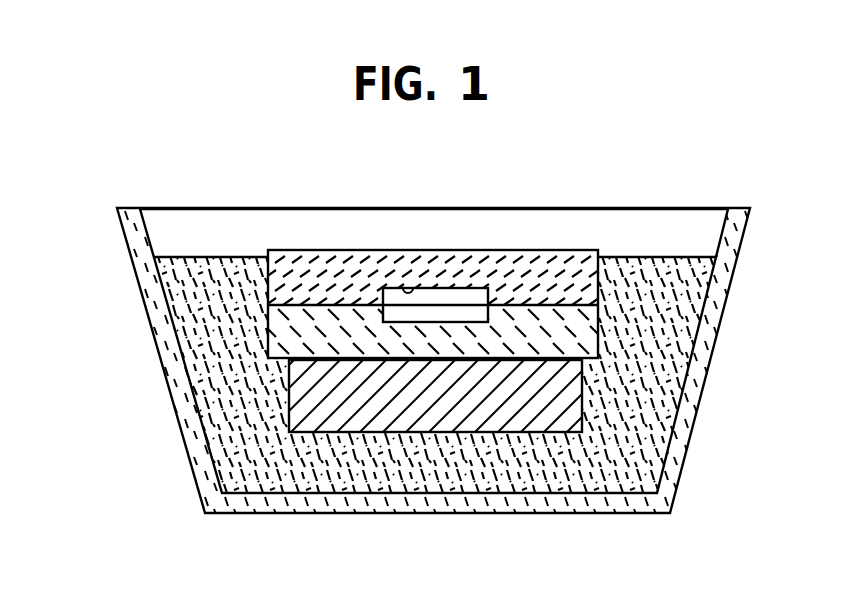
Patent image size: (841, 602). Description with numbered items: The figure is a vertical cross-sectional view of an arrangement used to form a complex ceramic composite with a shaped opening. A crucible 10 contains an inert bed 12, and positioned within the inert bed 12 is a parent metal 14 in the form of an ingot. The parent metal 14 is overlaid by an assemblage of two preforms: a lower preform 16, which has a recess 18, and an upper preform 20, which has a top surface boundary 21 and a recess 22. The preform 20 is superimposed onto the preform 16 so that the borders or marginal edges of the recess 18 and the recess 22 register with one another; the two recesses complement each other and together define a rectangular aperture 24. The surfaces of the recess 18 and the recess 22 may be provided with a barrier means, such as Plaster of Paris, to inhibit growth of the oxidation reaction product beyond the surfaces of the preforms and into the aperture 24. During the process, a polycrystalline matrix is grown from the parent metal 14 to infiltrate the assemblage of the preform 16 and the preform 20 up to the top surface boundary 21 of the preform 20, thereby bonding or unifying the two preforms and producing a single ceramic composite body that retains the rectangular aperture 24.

The crucible 10 is at (137, 247).
The inert bed 12 is at (667, 283).
The parent metal 14 is at (362, 412).
The preform 16 is at (376, 271).
The recess 18 is at (463, 320).
The preform 20 is at (573, 262).
The top surface boundary 21 is at (305, 250).
The recess 22 is at (407, 289).
The rectangular aperture 24 is at (440, 300).